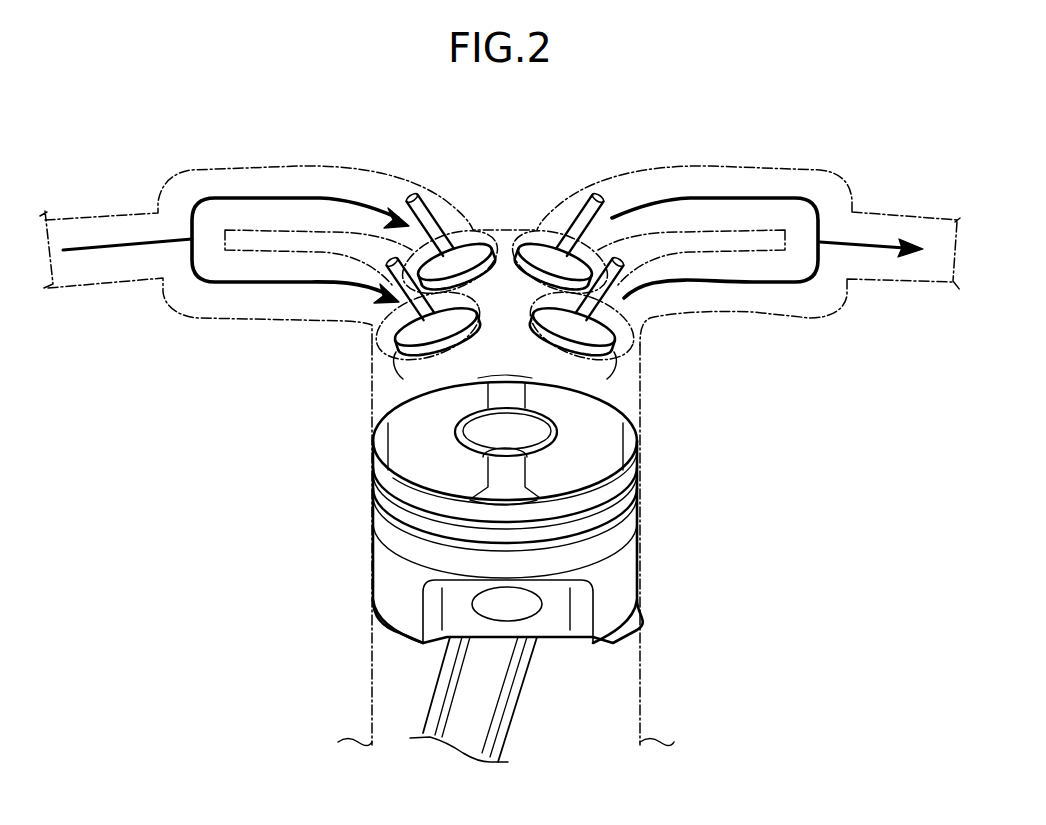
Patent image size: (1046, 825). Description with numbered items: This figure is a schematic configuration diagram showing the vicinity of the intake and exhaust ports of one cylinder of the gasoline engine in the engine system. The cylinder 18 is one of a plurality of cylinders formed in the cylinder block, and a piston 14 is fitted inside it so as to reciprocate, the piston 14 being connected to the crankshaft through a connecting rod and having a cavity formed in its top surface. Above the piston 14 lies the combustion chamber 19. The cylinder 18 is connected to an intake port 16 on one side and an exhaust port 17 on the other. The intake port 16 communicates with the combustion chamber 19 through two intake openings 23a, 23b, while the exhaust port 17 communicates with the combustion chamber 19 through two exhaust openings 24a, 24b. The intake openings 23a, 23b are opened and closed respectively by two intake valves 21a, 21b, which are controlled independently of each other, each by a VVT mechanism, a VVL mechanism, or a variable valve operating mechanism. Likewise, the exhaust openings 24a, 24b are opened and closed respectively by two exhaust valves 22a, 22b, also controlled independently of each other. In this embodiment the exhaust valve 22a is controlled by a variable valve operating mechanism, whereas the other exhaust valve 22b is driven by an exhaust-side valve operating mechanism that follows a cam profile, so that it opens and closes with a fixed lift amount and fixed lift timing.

The piston 14 is at (630, 566).
The intake port 16 is at (118, 213).
The exhaust port 17 is at (890, 212).
The cylinder 18 is at (640, 678).
The combustion chamber 19 is at (508, 337).
The intake valve 21a is at (427, 207).
The intake valve 21b is at (420, 362).
The exhaust valve 22a is at (587, 200).
The exhaust valve 22b is at (592, 362).
The intake opening 23a is at (473, 228).
The intake opening 23b is at (410, 345).
The exhaust opening 24a is at (538, 227).
The exhaust opening 24b is at (620, 340).